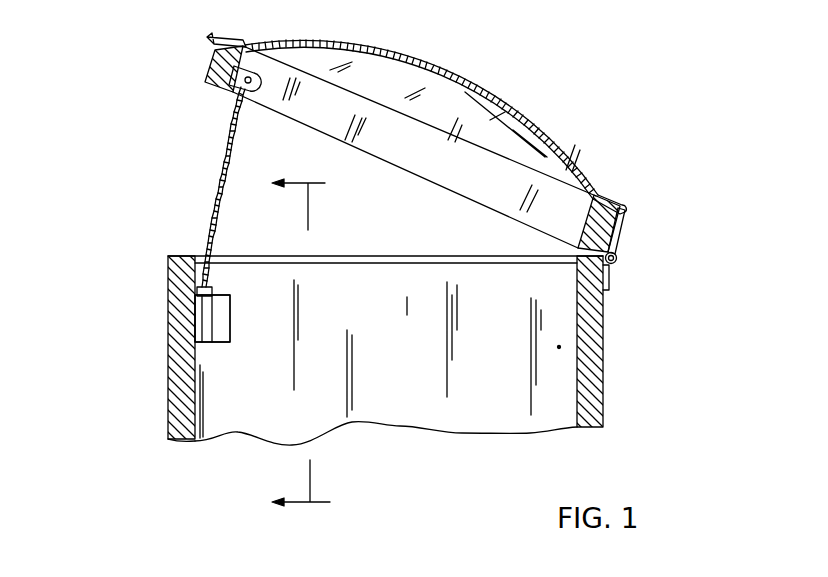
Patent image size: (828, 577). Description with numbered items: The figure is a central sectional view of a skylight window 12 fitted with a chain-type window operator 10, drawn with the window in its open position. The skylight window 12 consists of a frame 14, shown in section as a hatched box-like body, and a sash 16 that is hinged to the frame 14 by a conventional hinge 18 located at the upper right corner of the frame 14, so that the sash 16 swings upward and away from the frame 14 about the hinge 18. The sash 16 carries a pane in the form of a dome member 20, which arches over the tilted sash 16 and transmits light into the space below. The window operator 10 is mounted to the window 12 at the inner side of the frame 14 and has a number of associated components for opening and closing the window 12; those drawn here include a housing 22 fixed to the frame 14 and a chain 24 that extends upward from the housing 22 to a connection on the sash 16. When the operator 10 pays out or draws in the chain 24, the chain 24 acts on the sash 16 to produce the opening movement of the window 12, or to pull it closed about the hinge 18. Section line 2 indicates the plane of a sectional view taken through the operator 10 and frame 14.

The window operator 10 is at (242, 302).
The skylight window 12 is at (625, 168).
The frame 14 is at (178, 355).
The sash 16 is at (612, 232).
The hinge 18 is at (617, 258).
The dome member 20 is at (497, 98).
The housing 22 is at (232, 327).
The chain 24 is at (216, 202).
The section line 2- 2 is at (311, 343).